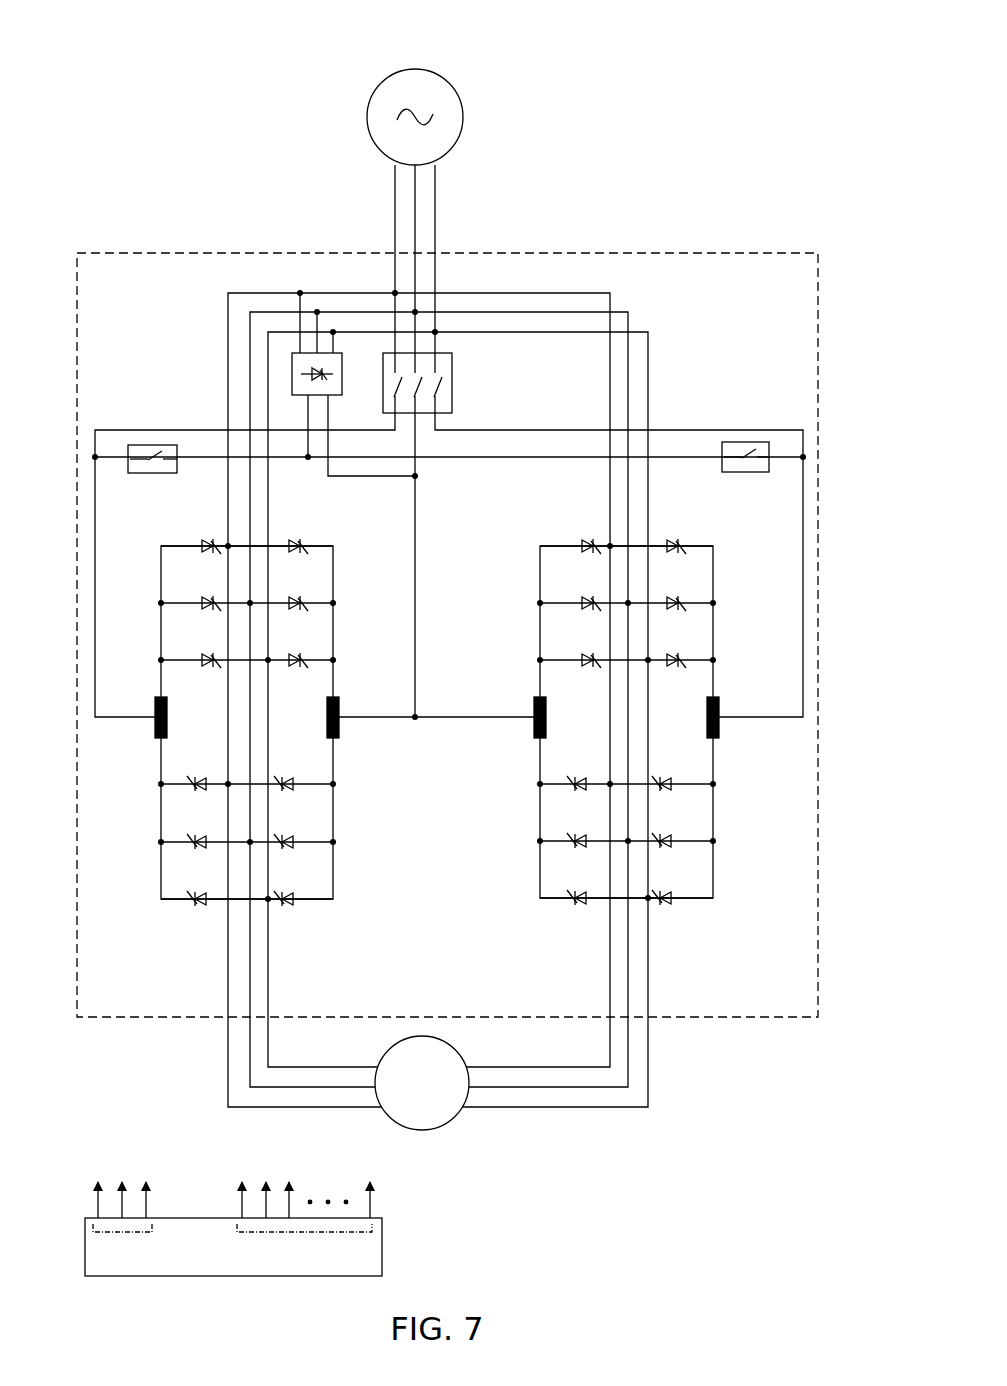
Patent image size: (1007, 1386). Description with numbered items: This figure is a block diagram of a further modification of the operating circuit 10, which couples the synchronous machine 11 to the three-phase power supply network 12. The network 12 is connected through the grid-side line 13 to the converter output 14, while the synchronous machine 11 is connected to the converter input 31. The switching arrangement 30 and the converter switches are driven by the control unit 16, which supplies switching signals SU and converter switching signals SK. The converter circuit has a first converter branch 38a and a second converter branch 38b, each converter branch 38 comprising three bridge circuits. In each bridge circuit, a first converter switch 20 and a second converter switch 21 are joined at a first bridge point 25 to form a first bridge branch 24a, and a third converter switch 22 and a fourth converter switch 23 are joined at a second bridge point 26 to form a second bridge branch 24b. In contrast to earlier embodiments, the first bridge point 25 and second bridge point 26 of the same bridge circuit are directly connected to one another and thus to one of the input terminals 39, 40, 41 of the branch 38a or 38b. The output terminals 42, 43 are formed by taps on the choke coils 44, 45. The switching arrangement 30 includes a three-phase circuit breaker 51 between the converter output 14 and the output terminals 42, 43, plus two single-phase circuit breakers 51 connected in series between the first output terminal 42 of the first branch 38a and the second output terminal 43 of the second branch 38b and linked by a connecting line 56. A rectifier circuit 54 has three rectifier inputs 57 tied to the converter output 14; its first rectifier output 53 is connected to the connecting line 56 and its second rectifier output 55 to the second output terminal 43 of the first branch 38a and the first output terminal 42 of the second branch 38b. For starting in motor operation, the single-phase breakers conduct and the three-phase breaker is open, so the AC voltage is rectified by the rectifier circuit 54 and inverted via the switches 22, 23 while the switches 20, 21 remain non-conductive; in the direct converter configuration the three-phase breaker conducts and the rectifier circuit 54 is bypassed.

The operating circuit 10 is at (664, 107).
The synchronous machine 11 is at (422, 1131).
The power supply network 12 is at (416, 68).
The grid-side line 13 is at (457, 212).
The converter output 14 is at (446, 263).
The control unit 16 is at (384, 1245).
The first converter switch 20 is at (198, 796).
The second converter switch 21 is at (288, 778).
The third converter switch 22 is at (205, 553).
The fourth converter switch 23 is at (296, 540).
The first bridge branch 24a is at (342, 787).
The second bridge branch 24b is at (342, 548).
The first bridge point 25 is at (210, 760).
The second bridge point 26 is at (222, 544).
The switching arrangement 30 is at (461, 649).
The converter input 31 is at (558, 1028).
The converter branch 38 is at (437, 684).
The first converter branch 38a is at (297, 540).
The second converter branch 38b is at (546, 540).
The first input terminal 39 is at (226, 938).
The second input terminal 40 is at (248, 970).
The third input terminal 41 is at (266, 1000).
The first output terminal 42 is at (97, 720).
The second output terminal 43 is at (341, 720).
The choke coil 44 is at (154, 710).
The choke coil 45 is at (326, 710).
The circuit breaker 51 is at (454, 372).
The first rectifier output 53 is at (306, 402).
The rectifier circuit 54 is at (291, 372).
The second rectifier output 55 is at (330, 400).
The connecting line 56 is at (486, 460).
The rectifier inputs 57 is at (298, 345).